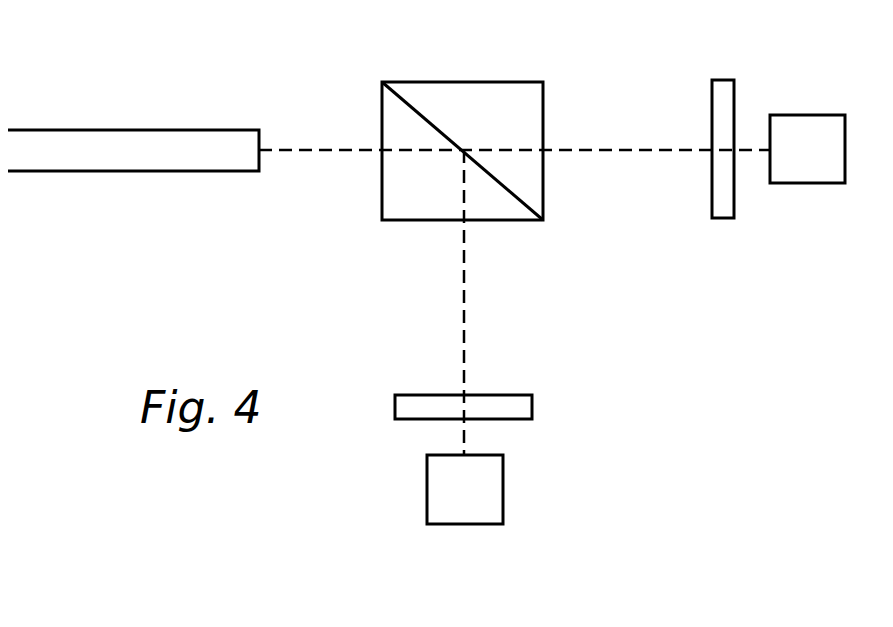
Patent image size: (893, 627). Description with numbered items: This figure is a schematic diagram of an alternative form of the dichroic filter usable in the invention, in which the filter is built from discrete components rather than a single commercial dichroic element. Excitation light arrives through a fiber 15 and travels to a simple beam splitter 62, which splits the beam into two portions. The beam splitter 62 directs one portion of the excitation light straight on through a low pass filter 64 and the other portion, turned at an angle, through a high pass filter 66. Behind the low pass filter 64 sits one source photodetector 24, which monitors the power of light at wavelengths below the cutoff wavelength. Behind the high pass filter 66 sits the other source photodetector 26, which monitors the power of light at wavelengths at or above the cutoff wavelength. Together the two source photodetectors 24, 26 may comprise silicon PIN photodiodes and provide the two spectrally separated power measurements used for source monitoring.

The fiber 15 is at (103, 130).
The beam splitter 62 is at (477, 80).
The low pass filter 64 is at (727, 80).
The source photodetector 24 is at (817, 183).
The high pass filter 66 is at (494, 393).
The source photodetector 26 is at (473, 524).